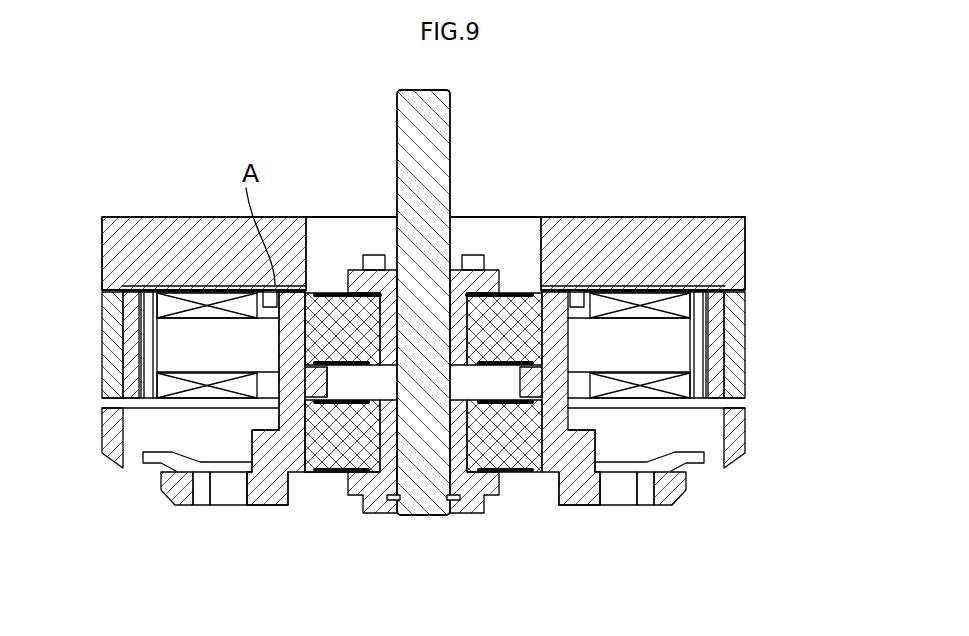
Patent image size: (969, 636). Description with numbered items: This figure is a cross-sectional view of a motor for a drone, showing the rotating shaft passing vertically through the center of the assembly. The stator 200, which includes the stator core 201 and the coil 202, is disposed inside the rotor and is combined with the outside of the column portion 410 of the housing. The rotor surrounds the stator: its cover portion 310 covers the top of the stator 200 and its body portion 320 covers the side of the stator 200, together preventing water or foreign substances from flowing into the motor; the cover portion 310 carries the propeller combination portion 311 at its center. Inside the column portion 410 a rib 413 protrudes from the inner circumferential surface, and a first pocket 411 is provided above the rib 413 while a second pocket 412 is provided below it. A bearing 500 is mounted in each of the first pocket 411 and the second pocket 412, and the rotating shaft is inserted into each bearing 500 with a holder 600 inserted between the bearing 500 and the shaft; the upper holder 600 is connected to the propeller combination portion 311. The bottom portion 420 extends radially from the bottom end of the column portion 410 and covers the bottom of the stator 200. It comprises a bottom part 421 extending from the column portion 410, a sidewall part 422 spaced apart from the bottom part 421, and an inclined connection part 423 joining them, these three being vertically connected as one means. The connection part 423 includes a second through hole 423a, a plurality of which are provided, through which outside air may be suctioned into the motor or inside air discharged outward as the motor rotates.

The stator 200 is at (466, 99).
The stator core 201 is at (666, 341).
The coil 202 is at (666, 381).
The cover portion 310 is at (746, 241).
The propeller combination portion 311 is at (485, 217).
The body portion 320 is at (746, 306).
The column portion 410 is at (300, 338).
The first pocket 411 is at (292, 352).
The second pocket 412 is at (318, 442).
The rib 413 is at (343, 471).
The bottom portion 420 is at (267, 572).
The bottom part 421 is at (257, 506).
The sidewall part 422 is at (103, 468).
The connection part 423 is at (175, 506).
The second through hole 423a is at (143, 465).
The bearing 500 is at (329, 304).
The holder 600 is at (375, 262).